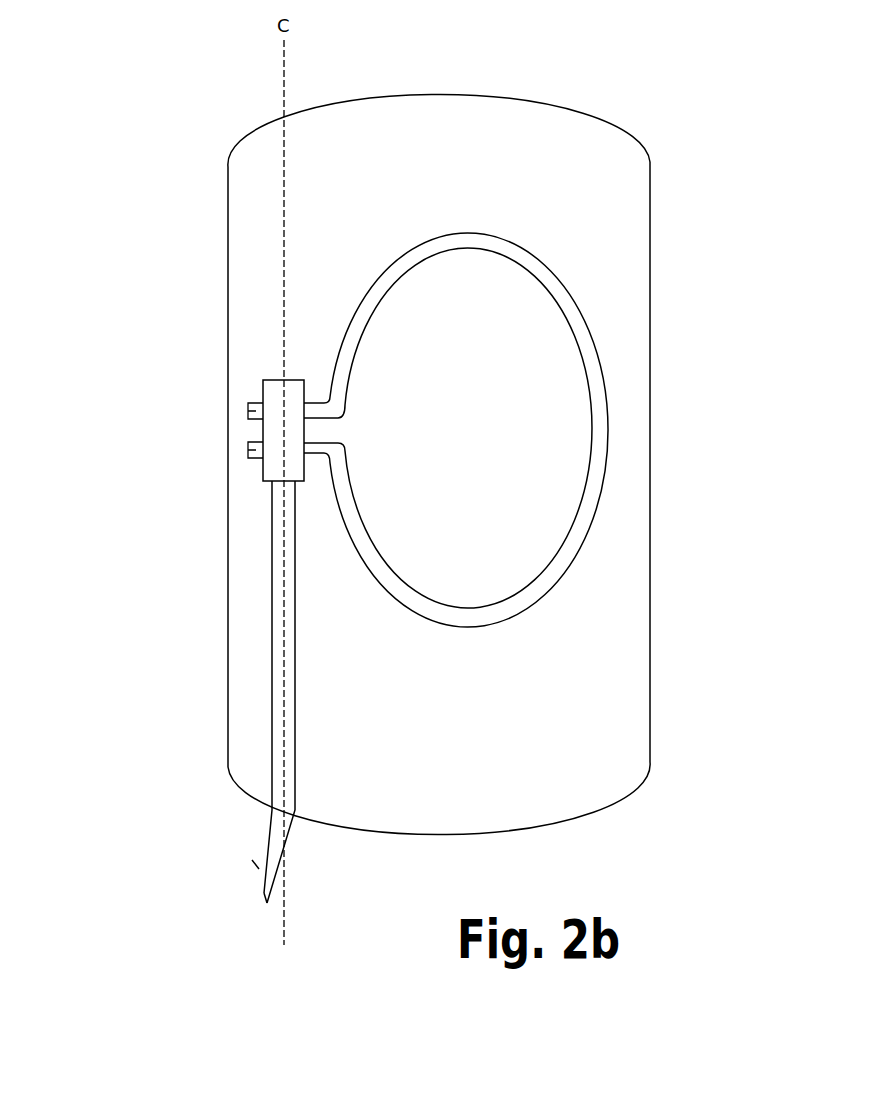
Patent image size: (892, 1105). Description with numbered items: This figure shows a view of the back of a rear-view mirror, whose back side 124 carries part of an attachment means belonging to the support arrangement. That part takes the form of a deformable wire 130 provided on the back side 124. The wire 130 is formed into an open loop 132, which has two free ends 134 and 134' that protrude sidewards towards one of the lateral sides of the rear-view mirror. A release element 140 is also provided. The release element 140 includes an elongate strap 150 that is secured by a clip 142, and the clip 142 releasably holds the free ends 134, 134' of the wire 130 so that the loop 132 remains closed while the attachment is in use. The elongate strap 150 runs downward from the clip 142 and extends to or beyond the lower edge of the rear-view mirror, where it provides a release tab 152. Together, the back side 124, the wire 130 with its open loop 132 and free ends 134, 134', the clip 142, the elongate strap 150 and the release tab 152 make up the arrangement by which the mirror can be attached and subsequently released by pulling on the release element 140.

The back side 124 is at (608, 198).
The deformable wire 130 is at (612, 372).
The open loop 132 is at (540, 583).
The free end 134 is at (220, 463).
The free end 134' is at (210, 405).
The clip 142 is at (275, 432).
The elongate strap 150 is at (288, 723).
The release tab 152 is at (262, 892).
The release element 140 is at (112, 352).